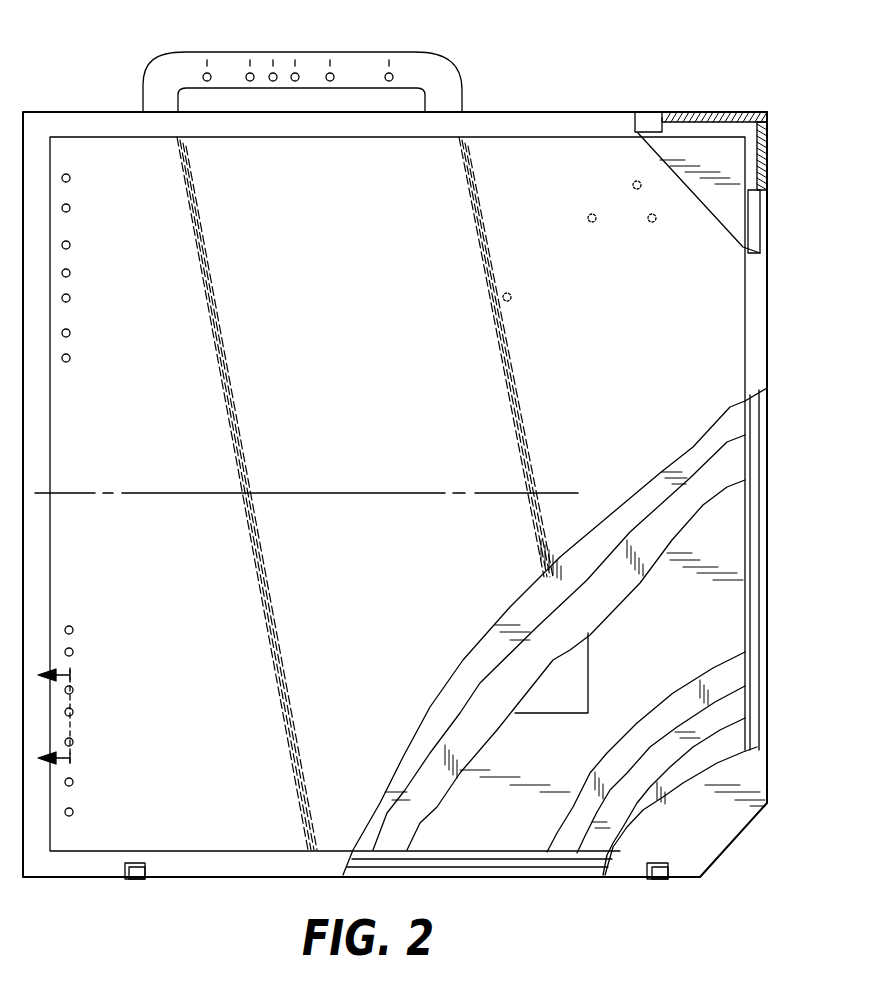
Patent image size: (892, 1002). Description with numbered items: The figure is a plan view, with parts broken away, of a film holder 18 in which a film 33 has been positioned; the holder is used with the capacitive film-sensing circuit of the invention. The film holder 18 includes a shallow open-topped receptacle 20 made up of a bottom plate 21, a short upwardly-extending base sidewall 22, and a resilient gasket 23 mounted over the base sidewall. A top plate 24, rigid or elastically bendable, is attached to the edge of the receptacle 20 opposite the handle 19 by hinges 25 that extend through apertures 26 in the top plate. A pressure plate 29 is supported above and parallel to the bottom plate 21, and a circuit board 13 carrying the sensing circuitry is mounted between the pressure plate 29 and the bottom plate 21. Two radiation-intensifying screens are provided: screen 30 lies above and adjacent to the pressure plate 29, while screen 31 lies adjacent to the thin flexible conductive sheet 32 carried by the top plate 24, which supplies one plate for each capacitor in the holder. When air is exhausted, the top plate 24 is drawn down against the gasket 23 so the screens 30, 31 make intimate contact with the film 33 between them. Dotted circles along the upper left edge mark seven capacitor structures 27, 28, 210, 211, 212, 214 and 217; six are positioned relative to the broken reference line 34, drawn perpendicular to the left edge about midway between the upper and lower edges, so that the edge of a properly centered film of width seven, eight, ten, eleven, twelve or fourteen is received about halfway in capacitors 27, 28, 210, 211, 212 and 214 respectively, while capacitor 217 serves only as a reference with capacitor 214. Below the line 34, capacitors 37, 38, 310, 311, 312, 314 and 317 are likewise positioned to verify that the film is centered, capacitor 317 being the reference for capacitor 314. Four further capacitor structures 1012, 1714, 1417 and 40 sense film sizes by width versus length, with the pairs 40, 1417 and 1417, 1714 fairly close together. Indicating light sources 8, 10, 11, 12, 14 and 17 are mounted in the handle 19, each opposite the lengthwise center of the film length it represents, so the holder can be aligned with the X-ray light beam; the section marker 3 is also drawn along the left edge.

The indicating light source 8 is at (203, 73).
The indicating light source 10 is at (247, 73).
The indicating light source 11 is at (275, 73).
The indicating light source 12 is at (298, 73).
The indicating light source 14 is at (334, 74).
The indicating light source 17 is at (393, 74).
The handle 19 is at (437, 80).
The film holder 18 is at (577, 108).
The base sidewall 22 is at (608, 112).
The resilient gasket 23 is at (654, 112).
The receptacle 20 is at (762, 195).
The capacitor structure 40 is at (634, 180).
The capacitor structure 1714 is at (590, 223).
The capacitor structure 1417 is at (650, 223).
The capacitor structure 1012 is at (503, 302).
The capacitor structure 217 is at (70, 178).
The capacitor structure 214 is at (70, 208).
The capacitor structure 212 is at (70, 245).
The capacitor structure 211 is at (70, 273).
The capacitor structure 210 is at (70, 298).
The capacitor structure 28 is at (70, 333).
The capacitor structure 27 is at (70, 358).
The broken reference line 34 is at (324, 491).
The top plate 24 is at (354, 568).
The conductive sheet 32 is at (523, 607).
The radiation-intensifying screen 31 is at (630, 577).
The radiation-intensifying screen 30 is at (652, 673).
The film 33 is at (559, 716).
The capacitor structure 37 is at (72, 627).
The capacitor structure 38 is at (72, 649).
The section line 3 is at (71, 718).
The capacitor structure 310 is at (73, 690).
The capacitor structure 311 is at (73, 712).
The capacitor structure 312 is at (73, 740).
The capacitor structure 314 is at (73, 782).
The capacitor structure 317 is at (73, 812).
The pressure plate 29 is at (570, 813).
The bottom plate 21 is at (678, 787).
The circuit board 13 is at (590, 842).
The hinge 25 is at (128, 880).
The aperture 26 is at (143, 880).